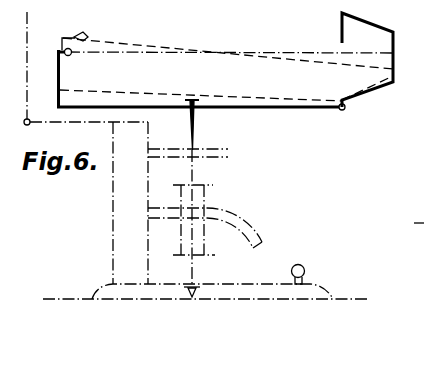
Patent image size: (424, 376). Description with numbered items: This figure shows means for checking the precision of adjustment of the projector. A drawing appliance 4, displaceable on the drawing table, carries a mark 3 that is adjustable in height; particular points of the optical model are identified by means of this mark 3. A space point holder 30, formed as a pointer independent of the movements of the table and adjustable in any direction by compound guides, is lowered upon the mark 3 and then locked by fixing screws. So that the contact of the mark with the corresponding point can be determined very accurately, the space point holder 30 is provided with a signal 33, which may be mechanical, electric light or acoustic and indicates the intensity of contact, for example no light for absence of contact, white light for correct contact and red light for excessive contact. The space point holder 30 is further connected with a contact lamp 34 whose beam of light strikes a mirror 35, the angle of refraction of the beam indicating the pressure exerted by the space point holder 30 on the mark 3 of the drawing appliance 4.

The mark plate 3 is at (226, 152).
The drawing appliance 4 is at (123, 198).
The space point holder 30 is at (194, 122).
The signal 33 is at (299, 265).
The contact lamp 34 is at (72, 50).
The mirror 35 is at (392, 46).